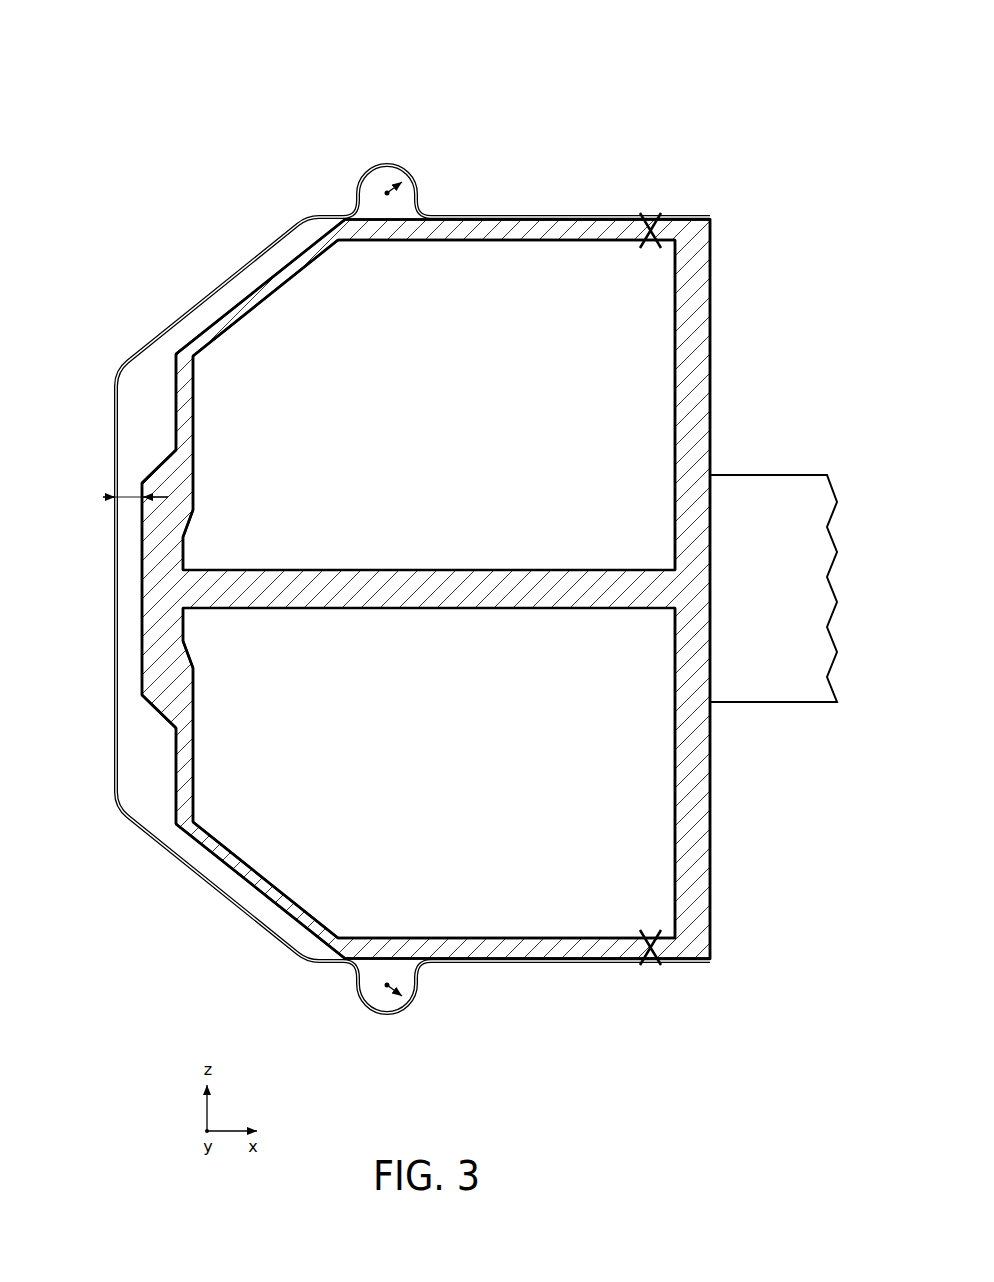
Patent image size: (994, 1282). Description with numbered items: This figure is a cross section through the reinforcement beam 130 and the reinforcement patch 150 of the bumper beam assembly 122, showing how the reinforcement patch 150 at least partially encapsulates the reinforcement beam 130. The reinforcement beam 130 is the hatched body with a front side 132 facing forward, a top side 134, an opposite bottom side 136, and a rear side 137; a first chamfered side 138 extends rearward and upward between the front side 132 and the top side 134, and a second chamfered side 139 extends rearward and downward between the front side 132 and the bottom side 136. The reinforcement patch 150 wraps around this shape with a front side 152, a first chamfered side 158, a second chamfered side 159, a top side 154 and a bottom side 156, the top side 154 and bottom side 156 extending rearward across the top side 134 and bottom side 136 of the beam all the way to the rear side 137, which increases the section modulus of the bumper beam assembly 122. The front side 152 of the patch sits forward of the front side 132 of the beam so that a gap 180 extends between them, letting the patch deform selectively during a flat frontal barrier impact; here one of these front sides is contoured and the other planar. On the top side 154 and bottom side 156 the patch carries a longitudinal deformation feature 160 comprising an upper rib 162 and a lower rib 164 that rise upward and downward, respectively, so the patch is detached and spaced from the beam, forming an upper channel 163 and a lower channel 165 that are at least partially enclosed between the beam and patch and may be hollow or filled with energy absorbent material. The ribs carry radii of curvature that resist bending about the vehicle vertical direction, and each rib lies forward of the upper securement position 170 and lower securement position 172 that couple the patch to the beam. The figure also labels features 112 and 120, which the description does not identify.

The component / battery cell 112 is at (765, 466).
The assembly 120 is at (164, 85).
The bumper beam assembly 122 is at (227, 85).
The reinforcement beam 130 is at (163, 398).
The front side of the reinforcement beam 132 is at (141, 672).
The top side of the reinforcement beam 134 is at (578, 227).
The bottom side of the reinforcement beam 136 is at (482, 962).
The rear side of the reinforcement beam 137 is at (733, 225).
The first chamfered side of the reinforcement beam 138 is at (268, 278).
The second chamfered side of the reinforcement beam 139 is at (246, 884).
The reinforcement patch 150 is at (379, 591).
The front side of the reinforcement patch 152 is at (115, 541).
The top side of the reinforcement patch 154 is at (473, 215).
The bottom side of the reinforcement patch 156 is at (567, 963).
The first chamfered side of the reinforcement patch 158 is at (156, 338).
The second chamfered side of the reinforcement patch 159 is at (158, 845).
The longitudinal deformation feature 160 is at (353, 161).
The upper rib 162 is at (371, 157).
The upper channel 163 is at (390, 175).
The lower rib 164 is at (385, 1021).
The lower channel 165 is at (371, 991).
The upper securement position 170 is at (646, 253).
The lower securement position 172 is at (646, 926).
The gap 180 is at (110, 496).